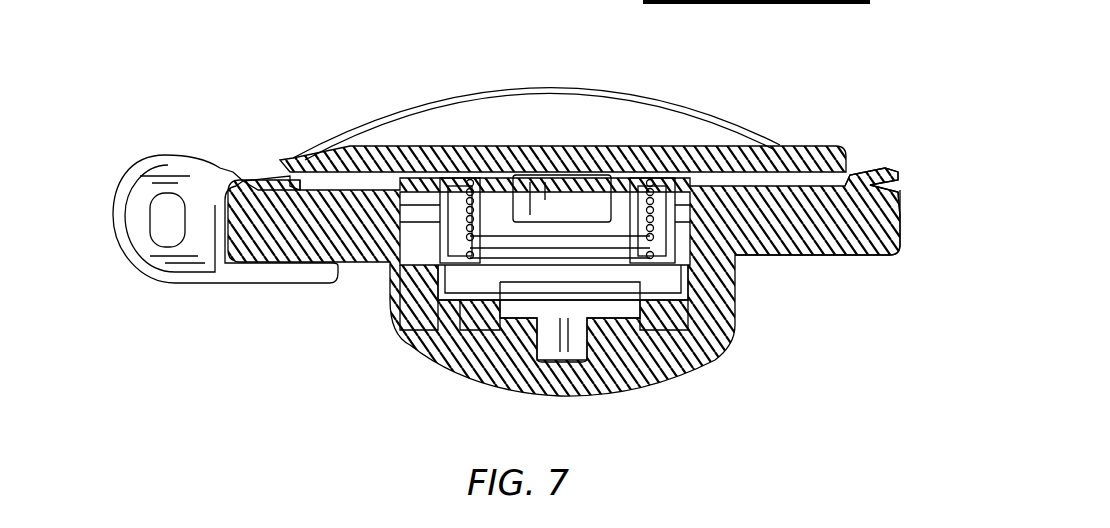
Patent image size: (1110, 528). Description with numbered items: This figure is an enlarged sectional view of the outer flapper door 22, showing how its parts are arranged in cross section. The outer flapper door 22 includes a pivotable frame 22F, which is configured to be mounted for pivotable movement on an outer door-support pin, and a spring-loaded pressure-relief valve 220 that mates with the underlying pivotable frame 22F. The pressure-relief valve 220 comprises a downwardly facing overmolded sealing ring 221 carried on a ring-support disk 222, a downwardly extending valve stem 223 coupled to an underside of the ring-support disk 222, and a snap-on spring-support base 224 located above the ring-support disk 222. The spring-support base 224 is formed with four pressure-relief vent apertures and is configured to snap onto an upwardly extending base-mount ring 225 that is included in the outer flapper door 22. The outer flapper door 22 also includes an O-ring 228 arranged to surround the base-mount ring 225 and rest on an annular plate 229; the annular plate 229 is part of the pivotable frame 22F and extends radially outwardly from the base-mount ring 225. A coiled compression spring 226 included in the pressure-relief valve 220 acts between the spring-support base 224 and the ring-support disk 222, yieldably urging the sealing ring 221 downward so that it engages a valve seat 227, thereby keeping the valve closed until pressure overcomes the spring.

The outer flapper door 22 is at (774, 74).
The pivotable frame 22F is at (124, 163).
The spring-loaded pressure-relief valve 220 is at (425, 240).
The overmolded sealing ring 221 is at (457, 272).
The ring-support disk 222 is at (430, 300).
The valve stem 223 is at (577, 338).
The spring-support base 224 is at (632, 142).
The base-mount ring 225 is at (718, 198).
The coiled compression spring 226 is at (437, 147).
The valve seat 227 is at (477, 310).
The O-ring 228 is at (257, 170).
The annular plate 229 is at (877, 258).